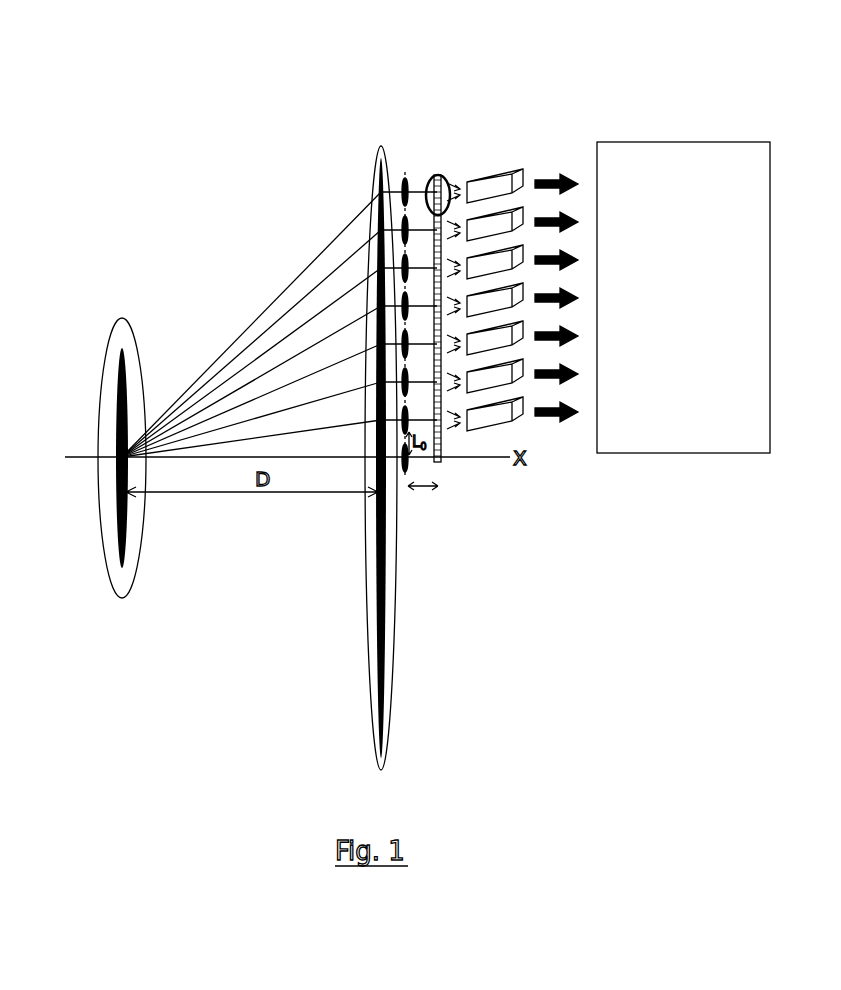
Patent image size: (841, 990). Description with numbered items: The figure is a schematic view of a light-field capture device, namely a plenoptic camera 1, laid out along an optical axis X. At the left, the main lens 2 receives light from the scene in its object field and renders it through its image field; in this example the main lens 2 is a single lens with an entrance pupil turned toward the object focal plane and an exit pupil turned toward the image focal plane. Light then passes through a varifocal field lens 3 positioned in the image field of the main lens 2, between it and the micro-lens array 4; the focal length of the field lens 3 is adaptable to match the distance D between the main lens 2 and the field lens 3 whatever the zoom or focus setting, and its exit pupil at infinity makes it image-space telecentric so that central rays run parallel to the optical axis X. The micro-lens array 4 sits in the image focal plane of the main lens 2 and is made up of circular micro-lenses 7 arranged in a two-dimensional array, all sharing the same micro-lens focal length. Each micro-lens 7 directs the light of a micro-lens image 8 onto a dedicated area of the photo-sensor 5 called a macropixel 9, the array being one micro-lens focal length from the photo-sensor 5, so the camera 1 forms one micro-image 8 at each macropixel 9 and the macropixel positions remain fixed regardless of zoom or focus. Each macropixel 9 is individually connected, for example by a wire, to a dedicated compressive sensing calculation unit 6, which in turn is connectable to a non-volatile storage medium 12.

The plenoptic camera 1 is at (132, 128).
The main lens 2 is at (113, 420).
The field lens 3 is at (372, 187).
The micro-lens array 4 is at (404, 159).
The photo-sensor 5 is at (435, 255).
The compressive sensing calculation unit 6 is at (511, 172).
The micro-lens 7 is at (408, 463).
The micro-lens image 8 is at (421, 190).
The macropixel 9 is at (440, 175).
The non-volatile storage medium 12 is at (680, 168).